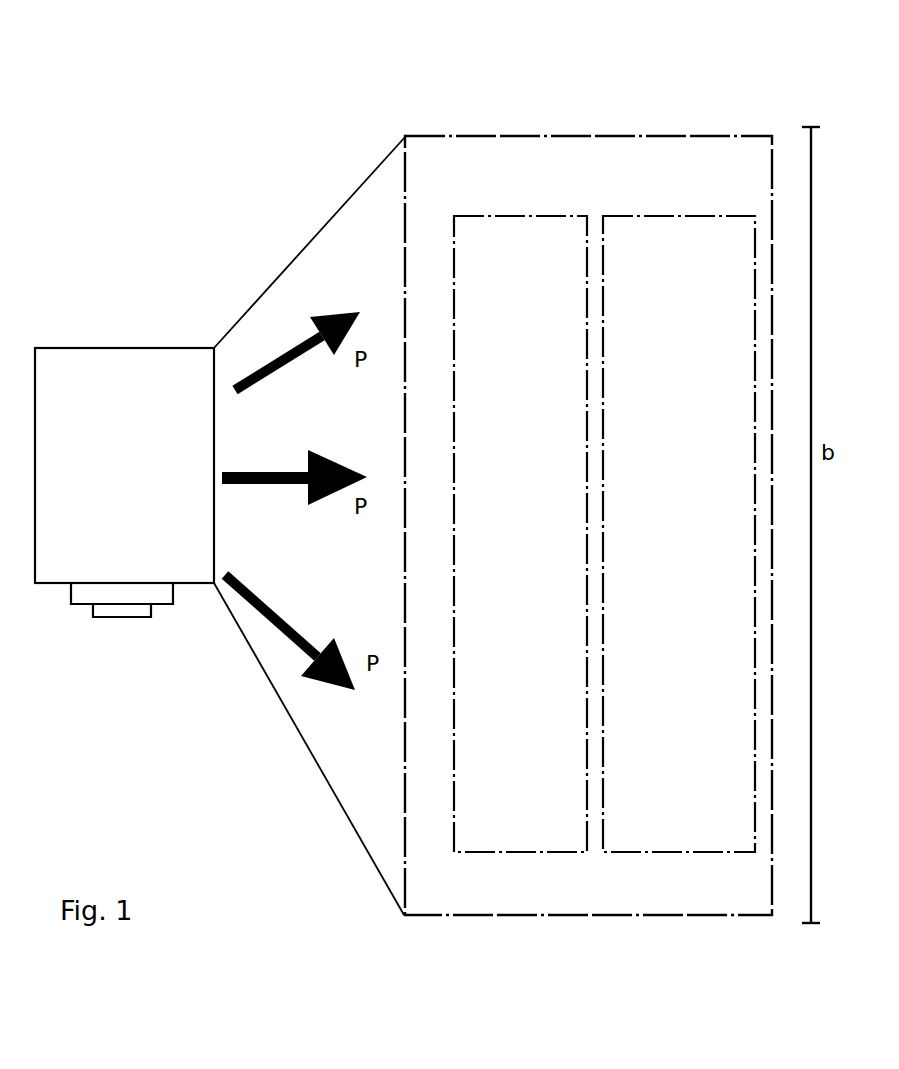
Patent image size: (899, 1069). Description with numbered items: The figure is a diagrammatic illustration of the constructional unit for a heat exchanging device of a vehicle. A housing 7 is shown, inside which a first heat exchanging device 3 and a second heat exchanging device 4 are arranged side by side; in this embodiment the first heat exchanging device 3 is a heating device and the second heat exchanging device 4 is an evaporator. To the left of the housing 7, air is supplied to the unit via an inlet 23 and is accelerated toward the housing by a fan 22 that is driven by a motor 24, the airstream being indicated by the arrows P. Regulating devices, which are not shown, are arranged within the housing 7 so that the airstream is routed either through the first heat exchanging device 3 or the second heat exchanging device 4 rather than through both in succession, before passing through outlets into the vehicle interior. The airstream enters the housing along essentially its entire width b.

The first heat exchanging device 3 is at (510, 297).
The second heat exchanging device 4 is at (712, 228).
The housing 7 is at (433, 188).
The fan 22 is at (155, 545).
The inlet 23 is at (128, 348).
The motor 24 is at (124, 605).